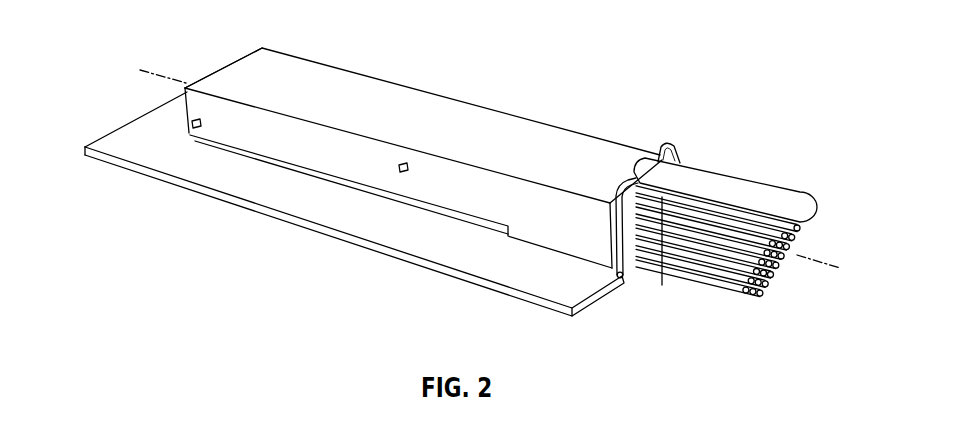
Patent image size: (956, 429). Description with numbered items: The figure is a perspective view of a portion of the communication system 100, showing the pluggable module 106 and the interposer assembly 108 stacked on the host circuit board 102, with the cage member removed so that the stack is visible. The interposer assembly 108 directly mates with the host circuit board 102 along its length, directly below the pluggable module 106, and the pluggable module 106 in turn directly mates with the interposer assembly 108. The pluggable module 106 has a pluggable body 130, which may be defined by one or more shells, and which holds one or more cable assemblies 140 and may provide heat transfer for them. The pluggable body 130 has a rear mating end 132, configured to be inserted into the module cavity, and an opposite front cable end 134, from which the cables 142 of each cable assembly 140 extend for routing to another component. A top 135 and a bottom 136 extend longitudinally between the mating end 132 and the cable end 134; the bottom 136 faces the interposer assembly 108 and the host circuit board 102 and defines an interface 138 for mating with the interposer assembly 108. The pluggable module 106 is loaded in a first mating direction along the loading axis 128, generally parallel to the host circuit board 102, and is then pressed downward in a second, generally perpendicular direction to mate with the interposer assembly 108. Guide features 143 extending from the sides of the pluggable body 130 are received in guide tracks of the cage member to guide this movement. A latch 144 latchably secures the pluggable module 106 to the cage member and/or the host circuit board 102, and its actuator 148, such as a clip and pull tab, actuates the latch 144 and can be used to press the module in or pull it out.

The communication system 100 is at (537, 73).
The host circuit board 102 is at (225, 180).
The pluggable module 106 is at (436, 184).
The interposer assembly 108 is at (418, 212).
The loading axis 128 is at (134, 68).
The pluggable body 130 is at (373, 95).
The mating end 132 is at (217, 68).
The cable end 134 is at (662, 285).
The top 135 is at (478, 127).
The bottom 136 is at (467, 222).
The interface 138 is at (442, 212).
The cable assemblies 140 is at (706, 292).
The cables 142 is at (745, 298).
The guide features 143 is at (190, 124).
The latch 144 is at (705, 163).
The actuator 148 is at (667, 147).